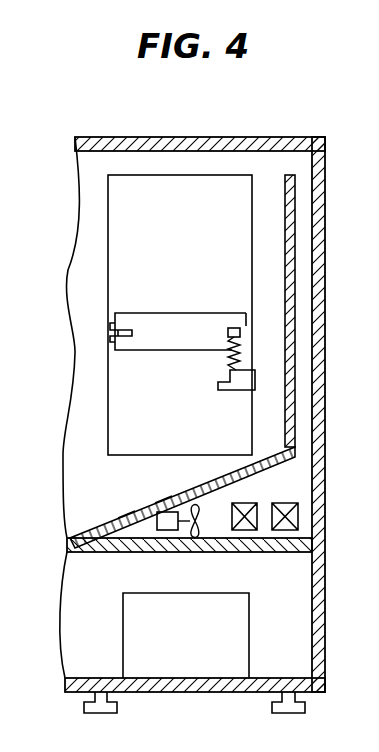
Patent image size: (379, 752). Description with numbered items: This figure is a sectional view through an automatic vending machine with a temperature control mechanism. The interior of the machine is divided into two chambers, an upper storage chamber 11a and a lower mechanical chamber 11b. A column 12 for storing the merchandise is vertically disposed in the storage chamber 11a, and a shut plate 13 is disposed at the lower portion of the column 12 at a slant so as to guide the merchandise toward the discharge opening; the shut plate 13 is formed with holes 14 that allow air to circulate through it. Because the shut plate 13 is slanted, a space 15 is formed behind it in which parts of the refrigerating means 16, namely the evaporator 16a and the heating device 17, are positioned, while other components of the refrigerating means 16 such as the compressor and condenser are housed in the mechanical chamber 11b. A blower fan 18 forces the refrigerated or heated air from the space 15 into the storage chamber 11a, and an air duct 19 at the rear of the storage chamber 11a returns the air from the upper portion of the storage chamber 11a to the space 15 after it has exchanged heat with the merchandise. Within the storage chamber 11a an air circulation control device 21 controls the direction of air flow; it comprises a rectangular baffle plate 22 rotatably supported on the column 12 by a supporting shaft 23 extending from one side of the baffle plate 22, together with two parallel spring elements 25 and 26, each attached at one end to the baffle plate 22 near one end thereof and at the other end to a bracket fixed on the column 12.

The storage chamber 11a is at (248, 166).
The mechanical chamber 11b is at (293, 578).
The column 12 is at (148, 192).
The shut plate 13 is at (163, 500).
The hole 14 is at (126, 512).
The space 15 is at (287, 476).
The refrigerating means 16 is at (243, 630).
The evaporator 16a is at (255, 503).
The heating device 17 is at (293, 513).
The blower fan 18 is at (163, 527).
The air duct 19 is at (305, 262).
The air circulation control device 21 is at (263, 352).
The baffle plate 22 is at (158, 319).
The supporting shaft 23 is at (118, 340).
The spring element 25 is at (235, 328).
The spring element 26 is at (232, 360).